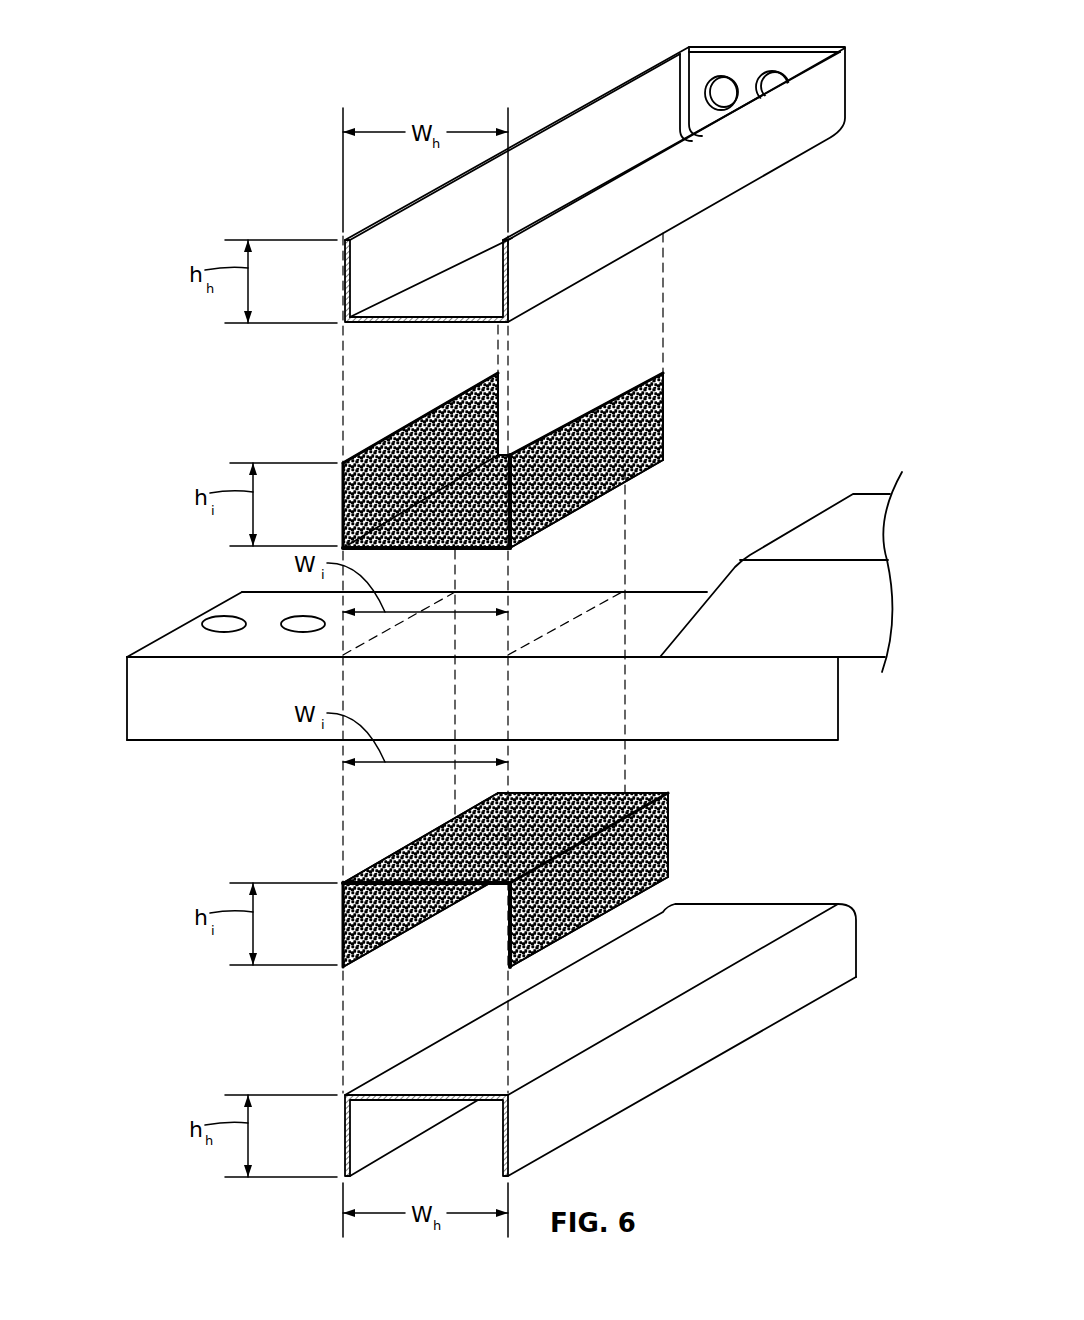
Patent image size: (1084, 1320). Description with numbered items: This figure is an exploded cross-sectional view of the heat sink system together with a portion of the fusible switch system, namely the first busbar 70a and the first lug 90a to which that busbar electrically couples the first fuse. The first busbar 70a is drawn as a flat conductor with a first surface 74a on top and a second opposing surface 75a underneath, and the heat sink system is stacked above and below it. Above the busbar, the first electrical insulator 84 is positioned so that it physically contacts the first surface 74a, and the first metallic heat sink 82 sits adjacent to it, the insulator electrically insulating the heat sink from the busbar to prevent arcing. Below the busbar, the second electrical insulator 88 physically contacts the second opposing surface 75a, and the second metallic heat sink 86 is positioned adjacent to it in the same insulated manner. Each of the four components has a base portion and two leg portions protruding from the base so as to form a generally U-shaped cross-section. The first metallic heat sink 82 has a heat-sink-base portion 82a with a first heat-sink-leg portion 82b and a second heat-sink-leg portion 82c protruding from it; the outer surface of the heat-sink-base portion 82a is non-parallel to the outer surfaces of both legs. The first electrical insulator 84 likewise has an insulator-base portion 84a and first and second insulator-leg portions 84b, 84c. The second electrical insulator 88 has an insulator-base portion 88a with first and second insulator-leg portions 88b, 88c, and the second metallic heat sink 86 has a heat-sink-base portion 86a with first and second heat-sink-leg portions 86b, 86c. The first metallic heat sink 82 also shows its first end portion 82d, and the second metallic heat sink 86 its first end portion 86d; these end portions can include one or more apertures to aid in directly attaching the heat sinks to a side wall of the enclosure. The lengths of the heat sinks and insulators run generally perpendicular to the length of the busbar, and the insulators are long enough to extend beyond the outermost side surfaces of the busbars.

The first busbar 70a is at (510, 636).
The first surface 74a is at (177, 655).
The second opposing surface 75a is at (175, 741).
The first metallic heat sink 82 is at (536, 185).
The heat-sink-base portion 82a is at (430, 298).
The first heat-sink-leg portion 82b is at (548, 152).
The second heat-sink-leg portion 82c is at (745, 162).
The first end portion 82d is at (743, 72).
The first electrical insulator 84 is at (445, 481).
The insulator-base portion 84a is at (490, 549).
The first insulator-leg portion 84b is at (397, 457).
The second insulator-leg portion 84c is at (593, 457).
The second metallic heat sink 86 is at (564, 1011).
The heat-sink-base portion 86a is at (445, 1055).
The first heat-sink-leg portion 86b is at (373, 1127).
The second heat-sink-leg portion 86c is at (643, 1075).
The first end portion 86d is at (857, 943).
The second electrical insulator 88 is at (483, 868).
The insulator-base portion 88a is at (411, 853).
The first insulator-leg portion 88b is at (343, 923).
The second insulator-leg portion 88c is at (668, 832).
The first lug 90a is at (820, 528).